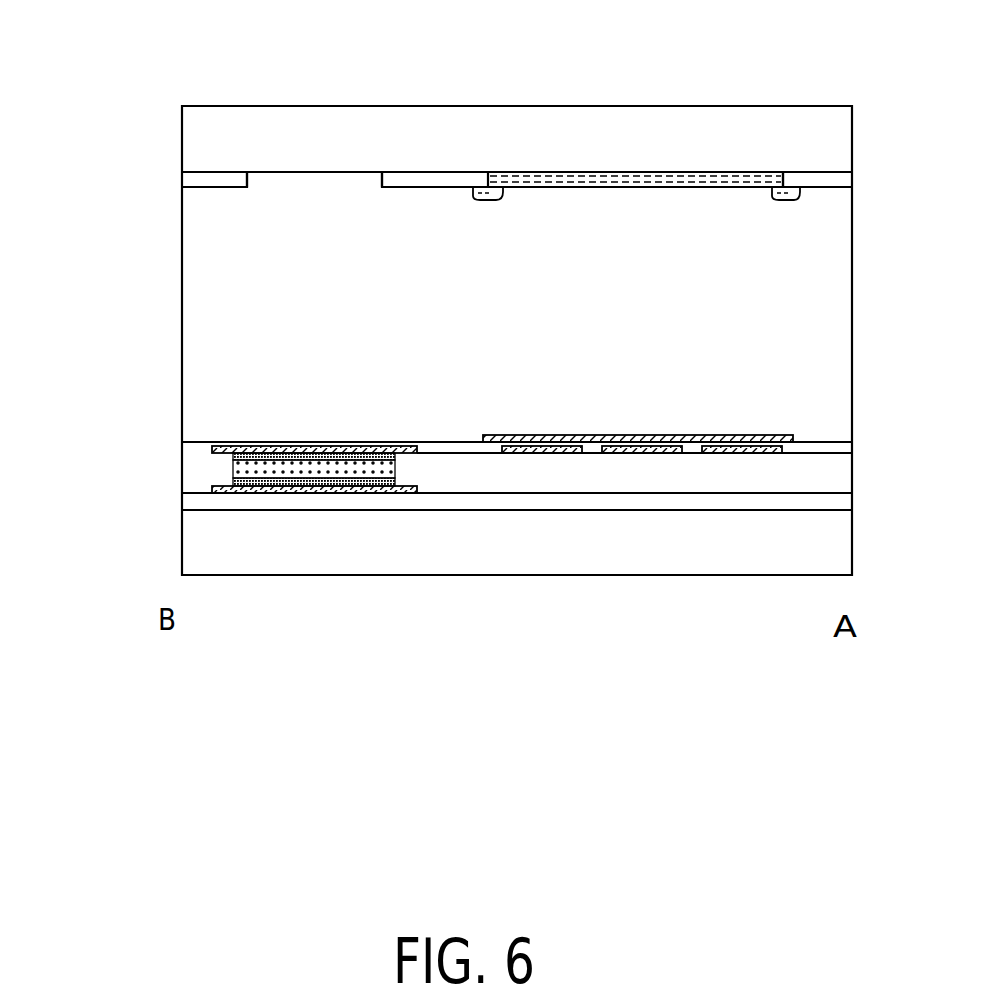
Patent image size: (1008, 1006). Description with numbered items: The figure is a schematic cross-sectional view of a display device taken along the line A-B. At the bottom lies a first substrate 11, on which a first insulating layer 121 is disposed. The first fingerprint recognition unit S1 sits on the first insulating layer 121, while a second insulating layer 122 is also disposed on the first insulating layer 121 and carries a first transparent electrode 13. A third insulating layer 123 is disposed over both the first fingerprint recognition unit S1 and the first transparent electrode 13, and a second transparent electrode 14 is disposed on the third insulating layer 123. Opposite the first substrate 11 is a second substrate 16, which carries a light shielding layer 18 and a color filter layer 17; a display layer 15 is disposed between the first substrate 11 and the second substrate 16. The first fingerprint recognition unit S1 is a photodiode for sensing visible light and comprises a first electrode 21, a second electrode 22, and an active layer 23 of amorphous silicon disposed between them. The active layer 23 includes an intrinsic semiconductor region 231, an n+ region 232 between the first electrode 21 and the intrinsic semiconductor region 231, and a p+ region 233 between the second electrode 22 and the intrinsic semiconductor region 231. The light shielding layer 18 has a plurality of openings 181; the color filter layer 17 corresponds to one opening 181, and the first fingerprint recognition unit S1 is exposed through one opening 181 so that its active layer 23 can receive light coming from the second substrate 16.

The first substrate 11 is at (197, 543).
The first insulating layer 121 is at (845, 500).
The second insulating layer 122 is at (846, 474).
The third insulating layer 123 is at (848, 447).
The first transparent electrode 13 is at (543, 446).
The second transparent electrode 14 is at (540, 436).
The display layer 15 is at (188, 297).
The second substrate 16 is at (188, 128).
The color filter layer 17 is at (598, 175).
The light shielding layer 18 is at (188, 181).
The opening 181 is at (247, 177).
The first electrode 21 is at (252, 493).
The second electrode 22 is at (313, 447).
The active layer 23 is at (90, 430).
The intrinsic semiconductor region 231 is at (238, 470).
The n+ region 232 is at (238, 482).
The p+ region 233 is at (235, 455).
The first fingerprint recognition unit S1 is at (50, 400).